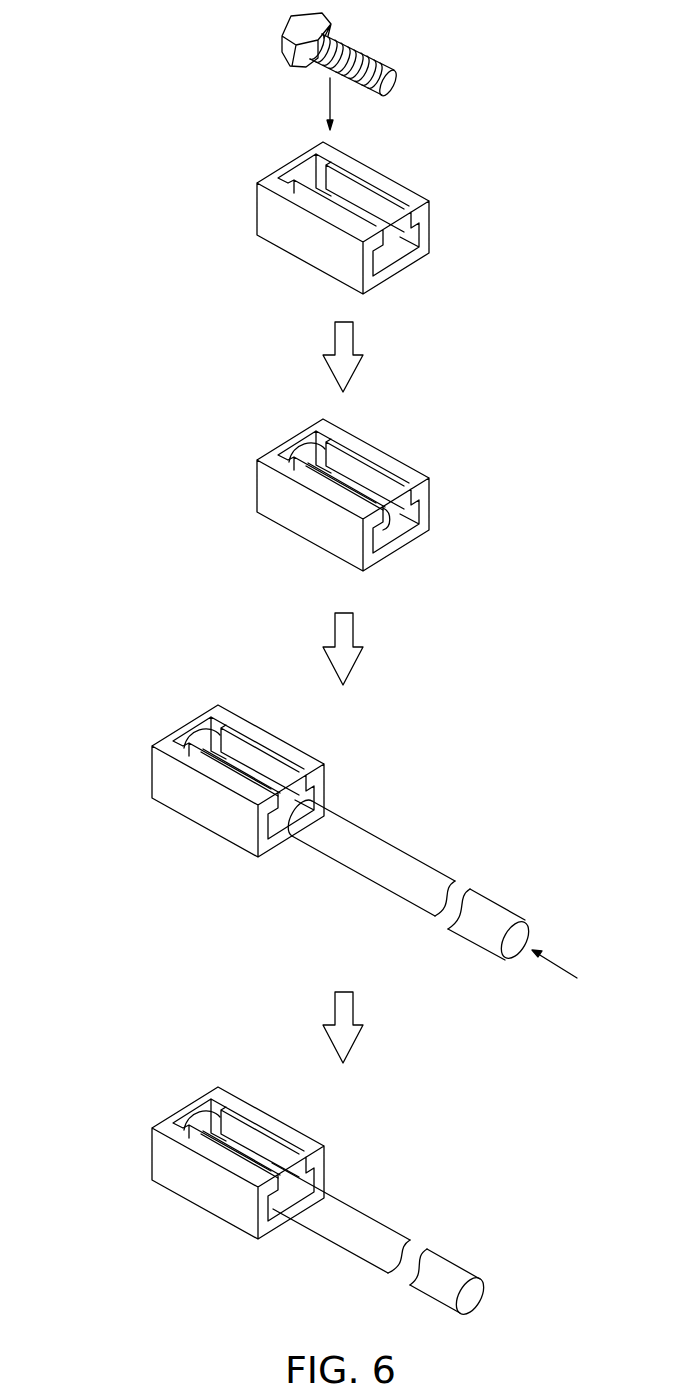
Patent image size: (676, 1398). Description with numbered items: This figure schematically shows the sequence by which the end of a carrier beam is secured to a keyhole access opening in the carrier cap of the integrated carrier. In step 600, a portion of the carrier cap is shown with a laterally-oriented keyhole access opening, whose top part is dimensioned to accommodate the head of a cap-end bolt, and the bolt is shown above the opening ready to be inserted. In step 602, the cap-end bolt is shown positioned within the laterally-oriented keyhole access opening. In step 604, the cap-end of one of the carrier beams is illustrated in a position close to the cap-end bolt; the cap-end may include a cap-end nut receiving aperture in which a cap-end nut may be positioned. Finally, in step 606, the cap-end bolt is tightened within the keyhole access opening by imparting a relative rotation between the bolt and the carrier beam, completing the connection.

The step 600 is at (188, 158).
The step 602 is at (188, 438).
The step 604 is at (132, 700).
The step 606 is at (130, 1073).